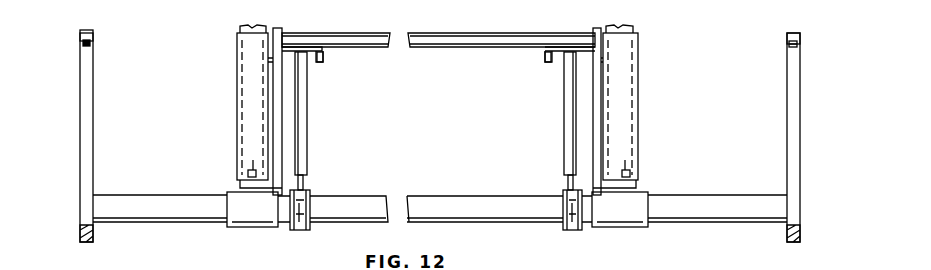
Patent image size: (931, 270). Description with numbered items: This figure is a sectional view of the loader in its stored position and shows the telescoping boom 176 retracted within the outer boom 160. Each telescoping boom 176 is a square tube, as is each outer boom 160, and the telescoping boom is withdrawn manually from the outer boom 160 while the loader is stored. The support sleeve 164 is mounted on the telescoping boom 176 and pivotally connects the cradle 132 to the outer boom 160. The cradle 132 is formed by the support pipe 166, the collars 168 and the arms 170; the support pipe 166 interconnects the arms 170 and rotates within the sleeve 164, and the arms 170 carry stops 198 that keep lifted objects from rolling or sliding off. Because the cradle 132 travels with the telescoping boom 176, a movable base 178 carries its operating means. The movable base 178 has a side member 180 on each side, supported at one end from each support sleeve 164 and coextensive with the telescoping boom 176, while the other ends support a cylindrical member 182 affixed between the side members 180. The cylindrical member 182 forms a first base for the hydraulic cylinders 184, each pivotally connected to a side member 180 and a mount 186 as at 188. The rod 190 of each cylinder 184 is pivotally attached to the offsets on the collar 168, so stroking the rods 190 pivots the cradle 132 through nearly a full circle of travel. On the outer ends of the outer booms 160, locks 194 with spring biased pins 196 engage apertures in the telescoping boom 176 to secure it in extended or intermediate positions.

The cradle 132 is at (75, 222).
The outer boom 160 is at (248, 58).
The support sleeve 164 is at (255, 215).
The support pipe 166 is at (452, 198).
The collar 168 is at (300, 230).
The arm 170 is at (82, 150).
The telescoping boom 176 is at (250, 28).
The movable base 178 is at (424, 30).
The side member 180 is at (277, 115).
The cylindrical member 182 is at (497, 45).
The hydraulic cylinder 184 is at (306, 143).
The mount 186 is at (319, 62).
The pivotal connection 188 is at (324, 57).
The rod 190 is at (303, 183).
The lock 194 is at (253, 166).
The spring biased pin 196 is at (248, 174).
The stop 198 is at (82, 42).